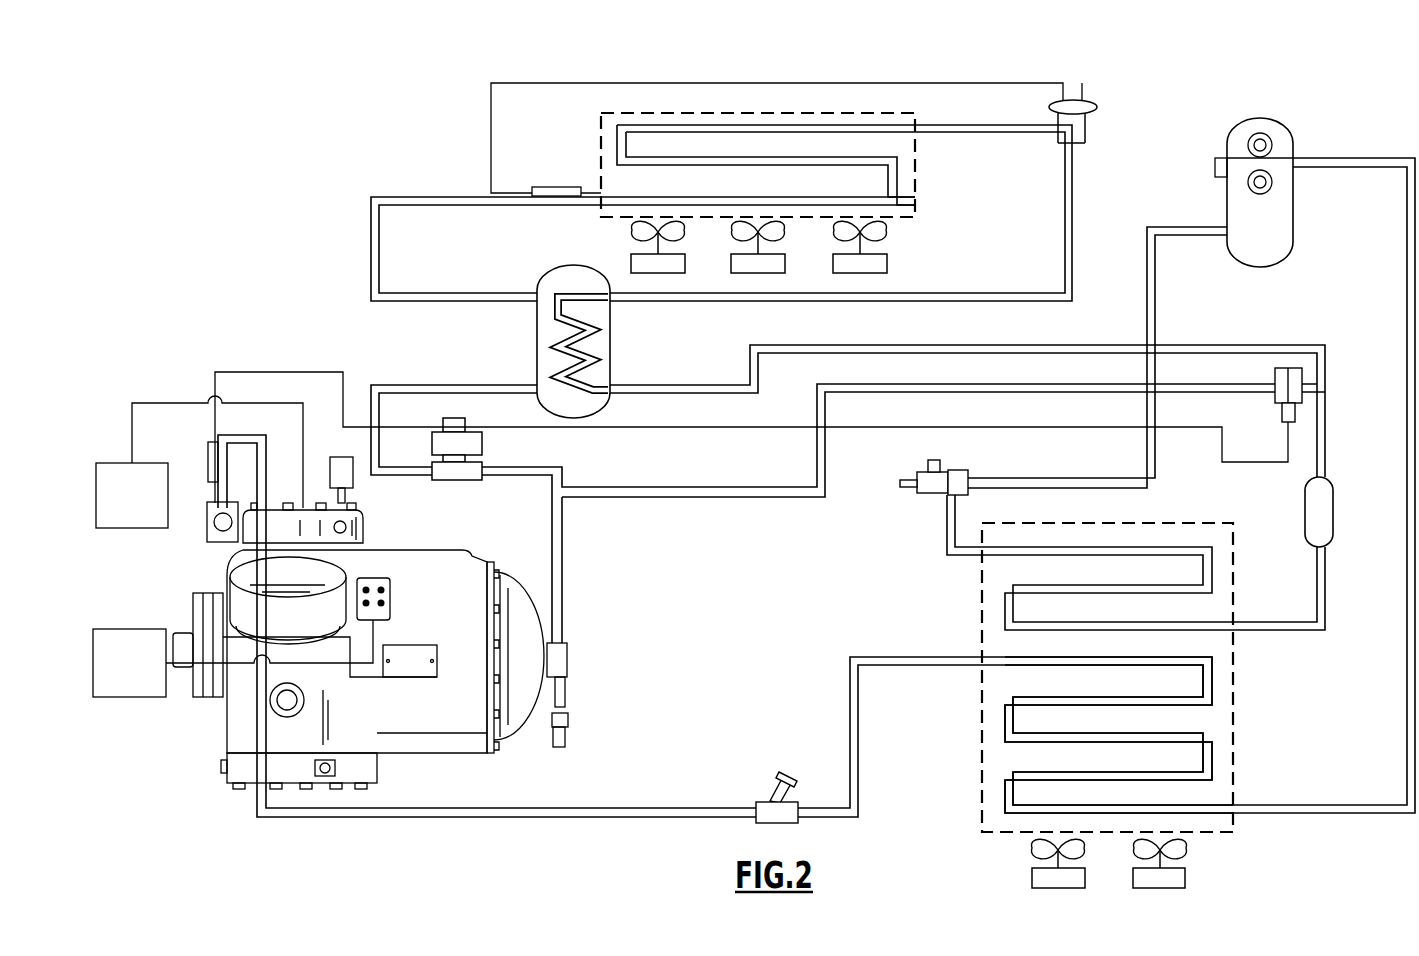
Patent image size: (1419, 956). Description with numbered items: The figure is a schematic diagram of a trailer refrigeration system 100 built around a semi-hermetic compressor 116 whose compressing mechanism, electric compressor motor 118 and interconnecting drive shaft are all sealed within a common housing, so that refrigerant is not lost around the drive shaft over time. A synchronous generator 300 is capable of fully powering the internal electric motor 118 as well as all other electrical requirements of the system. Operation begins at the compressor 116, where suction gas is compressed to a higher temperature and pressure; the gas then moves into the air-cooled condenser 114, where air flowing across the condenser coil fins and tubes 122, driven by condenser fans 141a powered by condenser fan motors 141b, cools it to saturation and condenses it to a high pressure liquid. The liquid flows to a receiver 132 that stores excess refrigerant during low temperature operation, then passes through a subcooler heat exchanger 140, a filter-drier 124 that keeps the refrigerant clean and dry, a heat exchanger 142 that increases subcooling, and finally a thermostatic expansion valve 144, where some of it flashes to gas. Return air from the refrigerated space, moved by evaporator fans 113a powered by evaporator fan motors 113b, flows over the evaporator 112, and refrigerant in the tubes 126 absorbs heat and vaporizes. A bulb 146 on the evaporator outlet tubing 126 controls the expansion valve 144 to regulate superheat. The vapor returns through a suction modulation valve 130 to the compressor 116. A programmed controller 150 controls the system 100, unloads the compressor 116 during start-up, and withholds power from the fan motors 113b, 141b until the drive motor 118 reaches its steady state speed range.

The refrigeration system 100 is at (997, 71).
The evaporator 112 is at (915, 184).
The evaporator fans 113a is at (778, 226).
The evaporator fan motors 113b is at (685, 265).
The air-cooled condenser 114 is at (1233, 678).
The compressor 116 is at (399, 623).
The electric compressor motor 118 is at (512, 746).
The condenser coil fins and tubes 122 is at (1212, 757).
The filter-drier 124 is at (1333, 505).
The evaporator tubes 126 is at (617, 139).
The suction modulation valve 130 is at (452, 480).
The receiver 132 is at (1293, 228).
The subcooler heat exchanger 140 is at (982, 600).
The condenser fans 141a is at (1030, 850).
The condenser fan motors 141b is at (1032, 880).
The heat exchanger 142 is at (610, 362).
The thermostatic expansion valve 144 is at (1087, 130).
The thermostatic expansion valve bulb 146 is at (573, 187).
The programmed controller 150 is at (150, 508).
The synchronous generator 300 is at (148, 677).